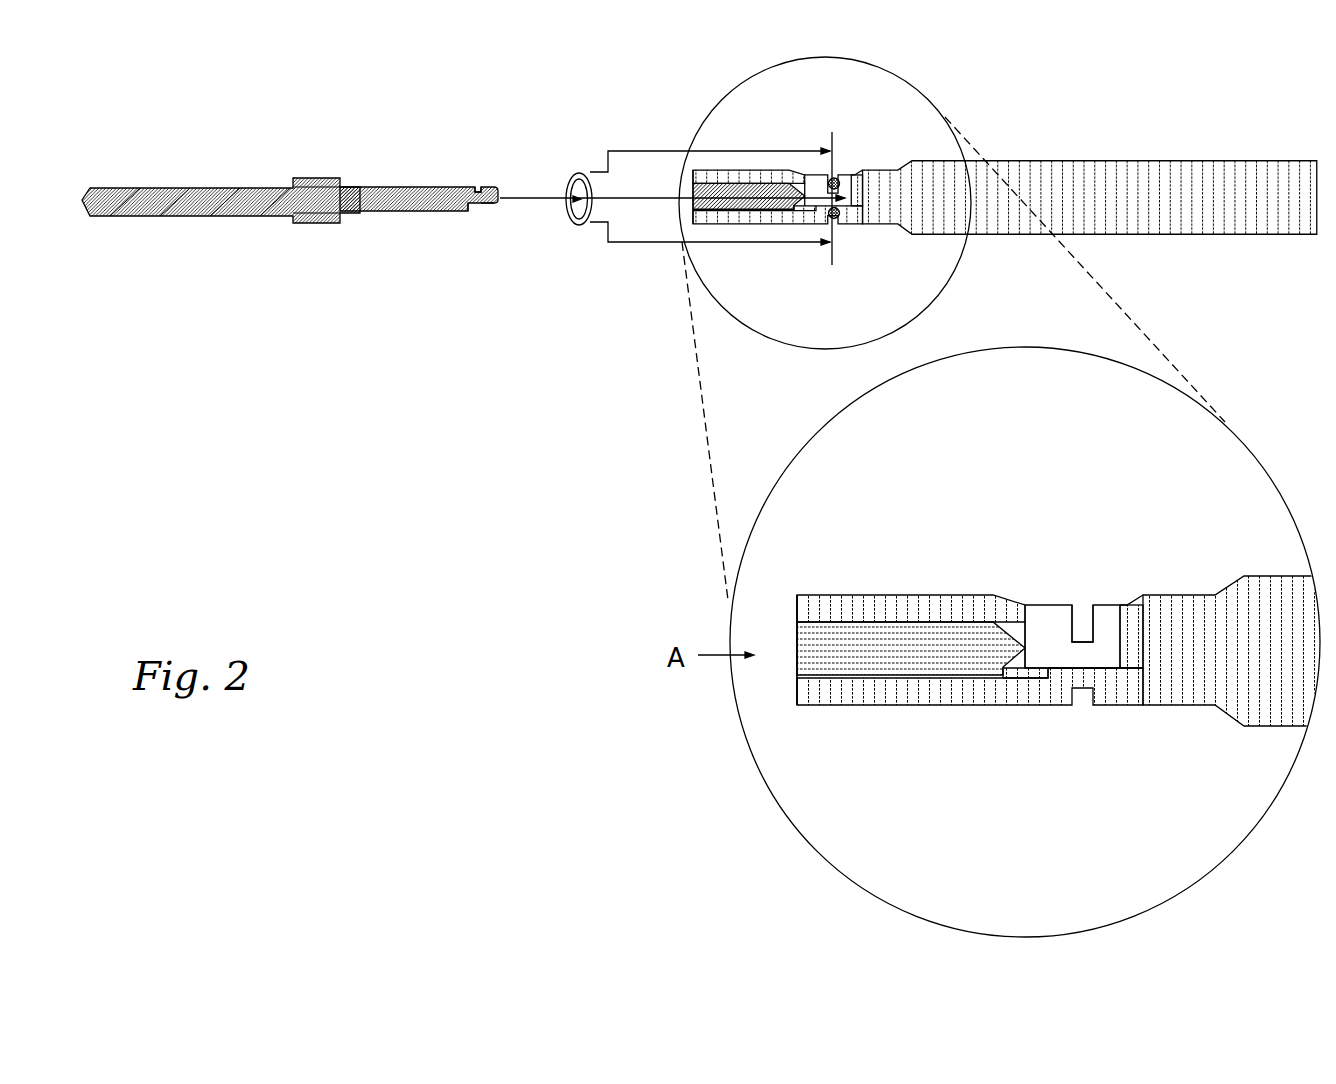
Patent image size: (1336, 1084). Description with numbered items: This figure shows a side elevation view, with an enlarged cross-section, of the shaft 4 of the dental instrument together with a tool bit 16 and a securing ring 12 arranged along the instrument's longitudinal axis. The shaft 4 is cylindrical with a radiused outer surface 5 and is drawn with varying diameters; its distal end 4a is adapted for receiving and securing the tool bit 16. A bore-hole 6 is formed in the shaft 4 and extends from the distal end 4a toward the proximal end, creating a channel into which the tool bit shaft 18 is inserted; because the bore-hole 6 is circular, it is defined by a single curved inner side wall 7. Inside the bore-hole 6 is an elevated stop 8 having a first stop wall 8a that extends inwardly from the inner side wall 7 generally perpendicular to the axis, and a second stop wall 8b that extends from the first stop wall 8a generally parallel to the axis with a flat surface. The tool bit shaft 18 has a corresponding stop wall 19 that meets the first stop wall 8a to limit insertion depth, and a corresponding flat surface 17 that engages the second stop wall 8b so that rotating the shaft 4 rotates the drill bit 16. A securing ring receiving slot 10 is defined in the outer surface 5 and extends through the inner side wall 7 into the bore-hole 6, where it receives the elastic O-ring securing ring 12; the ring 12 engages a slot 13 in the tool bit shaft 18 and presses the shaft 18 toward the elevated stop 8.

The shaft 4 is at (1100, 126).
The distal end of the shaft 4a is at (687, 240).
The outer surface of the shaft 5 is at (836, 595).
The bore-hole 6 is at (815, 655).
The inner side wall 7 is at (796, 630).
The elevated stop 8 is at (1048, 646).
The first stop wall 8a is at (1047, 673).
The second stop wall 8b is at (1105, 668).
The securing ring receiving slot 10 is at (1088, 606).
The securing ring 12 is at (580, 173).
The slot 13 is at (483, 188).
The tool bit 16 is at (207, 186).
The flat surface 17 is at (486, 205).
The tool bit shaft 18 is at (410, 185).
The stop wall 19 is at (468, 214).